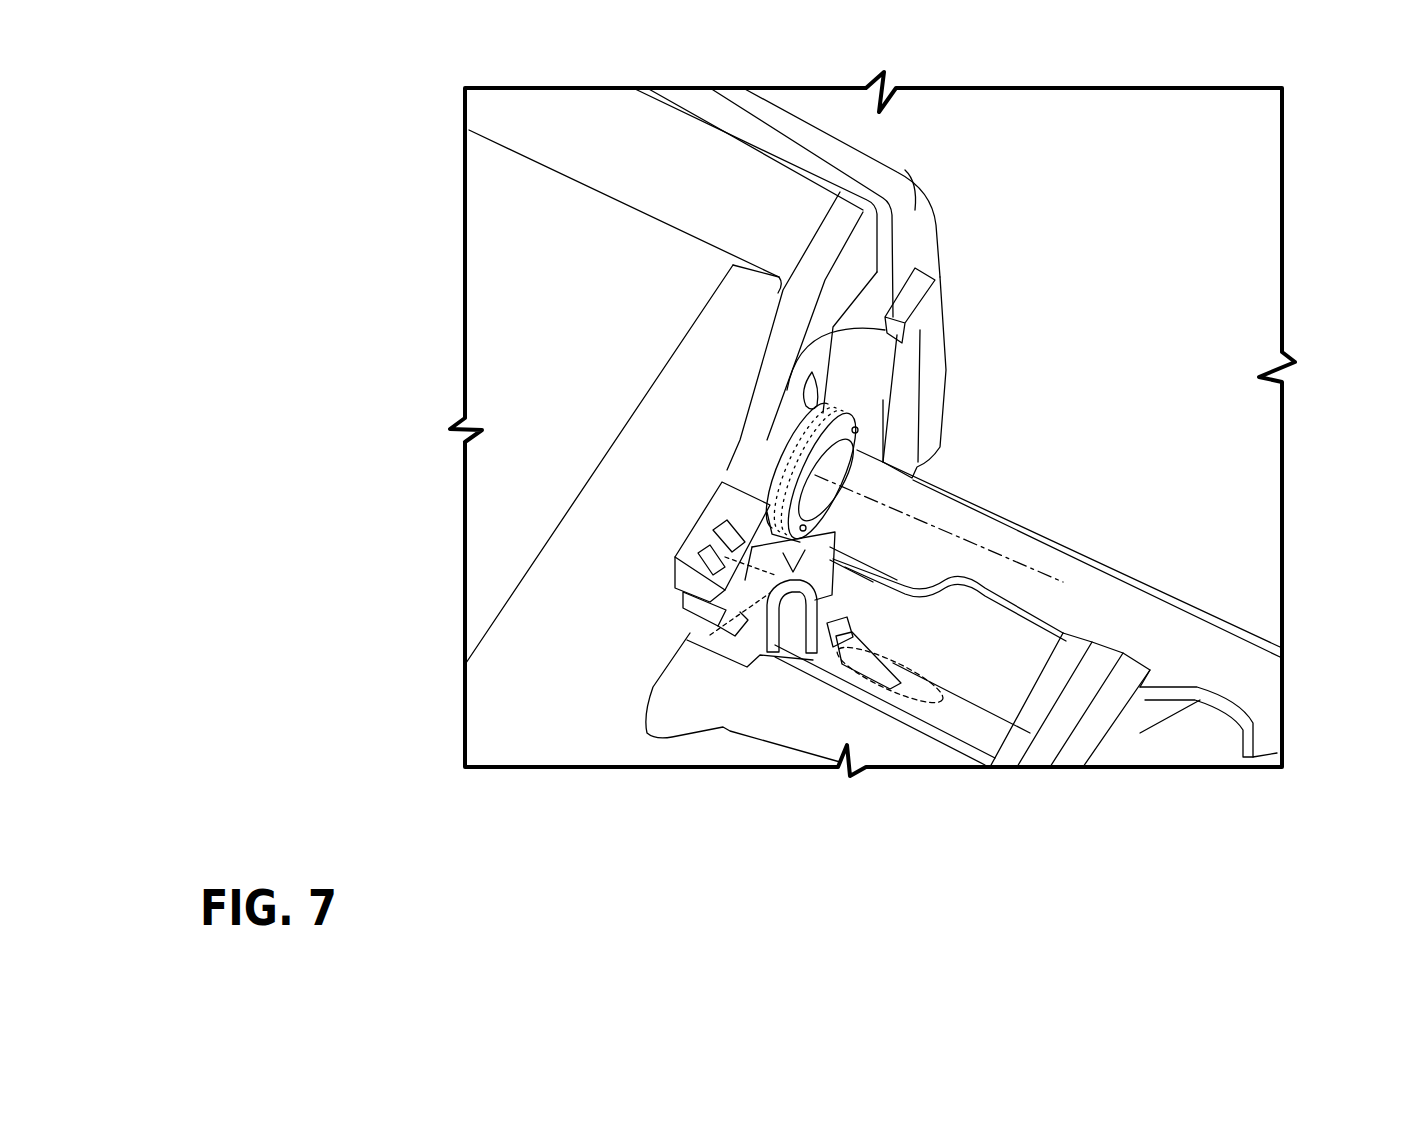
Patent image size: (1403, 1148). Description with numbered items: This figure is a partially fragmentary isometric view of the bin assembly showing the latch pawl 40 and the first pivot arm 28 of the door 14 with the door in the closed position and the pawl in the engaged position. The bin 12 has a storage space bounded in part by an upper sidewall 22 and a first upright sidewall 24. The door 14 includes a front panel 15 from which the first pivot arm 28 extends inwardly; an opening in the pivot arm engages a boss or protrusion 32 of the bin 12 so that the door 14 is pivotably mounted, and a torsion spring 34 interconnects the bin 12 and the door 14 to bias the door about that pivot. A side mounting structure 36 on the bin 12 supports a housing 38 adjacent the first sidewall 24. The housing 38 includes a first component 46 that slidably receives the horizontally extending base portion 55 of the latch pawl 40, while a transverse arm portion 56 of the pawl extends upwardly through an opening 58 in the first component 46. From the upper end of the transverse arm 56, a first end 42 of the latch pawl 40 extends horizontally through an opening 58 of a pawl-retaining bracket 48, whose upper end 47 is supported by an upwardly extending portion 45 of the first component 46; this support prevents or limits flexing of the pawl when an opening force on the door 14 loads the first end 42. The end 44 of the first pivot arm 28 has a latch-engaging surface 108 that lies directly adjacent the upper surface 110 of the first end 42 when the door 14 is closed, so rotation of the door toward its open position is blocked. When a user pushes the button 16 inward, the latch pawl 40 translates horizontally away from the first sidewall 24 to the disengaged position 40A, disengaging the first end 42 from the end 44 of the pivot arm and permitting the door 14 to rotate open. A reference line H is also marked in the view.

The bin 12 is at (505, 533).
The door 14 is at (883, 151).
The front panel 15 is at (940, 250).
The button 16 is at (1095, 610).
The upper sidewall 22 is at (550, 375).
The first upright sidewall 24 is at (500, 708).
The first pivot arm 28 is at (737, 432).
The boss or protrusion 32 is at (866, 425).
The torsion spring 34 is at (827, 410).
The side mounting structure 36 is at (882, 350).
The housing 38 is at (1232, 690).
The latch pawl 40 is at (952, 737).
The disengaged position 40A is at (897, 643).
The first end 42 is at (710, 635).
The end of first pivot arm 44 is at (680, 548).
The upwardly-extending portion 45 is at (684, 703).
The first component 46 is at (1130, 740).
The upper end 47 is at (740, 645).
The pawl-retaining bracket 48 is at (838, 533).
The base portion 55 is at (940, 700).
The transverse arm portion 56 is at (813, 663).
The opening 58 is at (777, 660).
The latch-engaging surface 108 is at (683, 600).
The upper surface 110 is at (680, 558).
The axis H is at (970, 537).